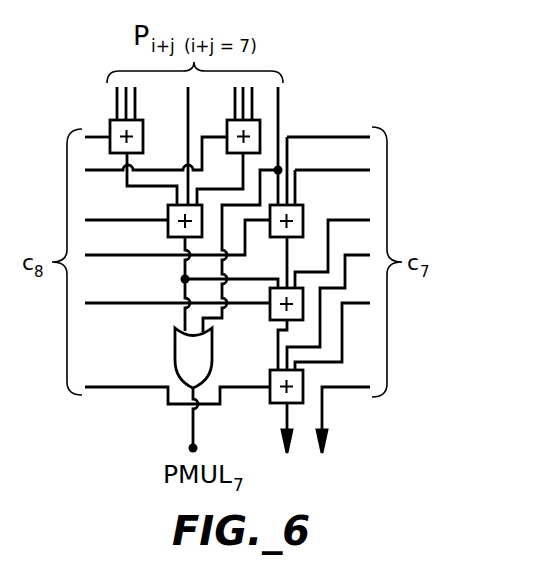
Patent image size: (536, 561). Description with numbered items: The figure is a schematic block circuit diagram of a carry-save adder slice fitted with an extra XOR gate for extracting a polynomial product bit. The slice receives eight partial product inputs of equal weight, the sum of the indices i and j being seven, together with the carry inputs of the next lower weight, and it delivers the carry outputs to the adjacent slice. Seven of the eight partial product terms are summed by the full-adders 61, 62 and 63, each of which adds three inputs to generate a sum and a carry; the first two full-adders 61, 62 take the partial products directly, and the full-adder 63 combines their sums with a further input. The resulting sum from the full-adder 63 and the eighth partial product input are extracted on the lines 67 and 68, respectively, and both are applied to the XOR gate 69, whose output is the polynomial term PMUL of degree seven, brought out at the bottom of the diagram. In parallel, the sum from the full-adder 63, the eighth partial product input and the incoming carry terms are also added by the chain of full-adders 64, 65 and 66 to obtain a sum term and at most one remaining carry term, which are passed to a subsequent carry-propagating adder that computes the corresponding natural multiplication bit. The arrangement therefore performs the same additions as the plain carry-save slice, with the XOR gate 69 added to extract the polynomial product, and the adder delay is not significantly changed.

The full-adder 61 is at (145, 122).
The full-adder 62 is at (229, 122).
The full-adder 63 is at (168, 232).
The full-adder 64 is at (303, 215).
The full-adder 65 is at (270, 318).
The full-adder 66 is at (270, 402).
The line 67 is at (182, 281).
The line 68 is at (226, 290).
The XOR gate 69 is at (175, 345).